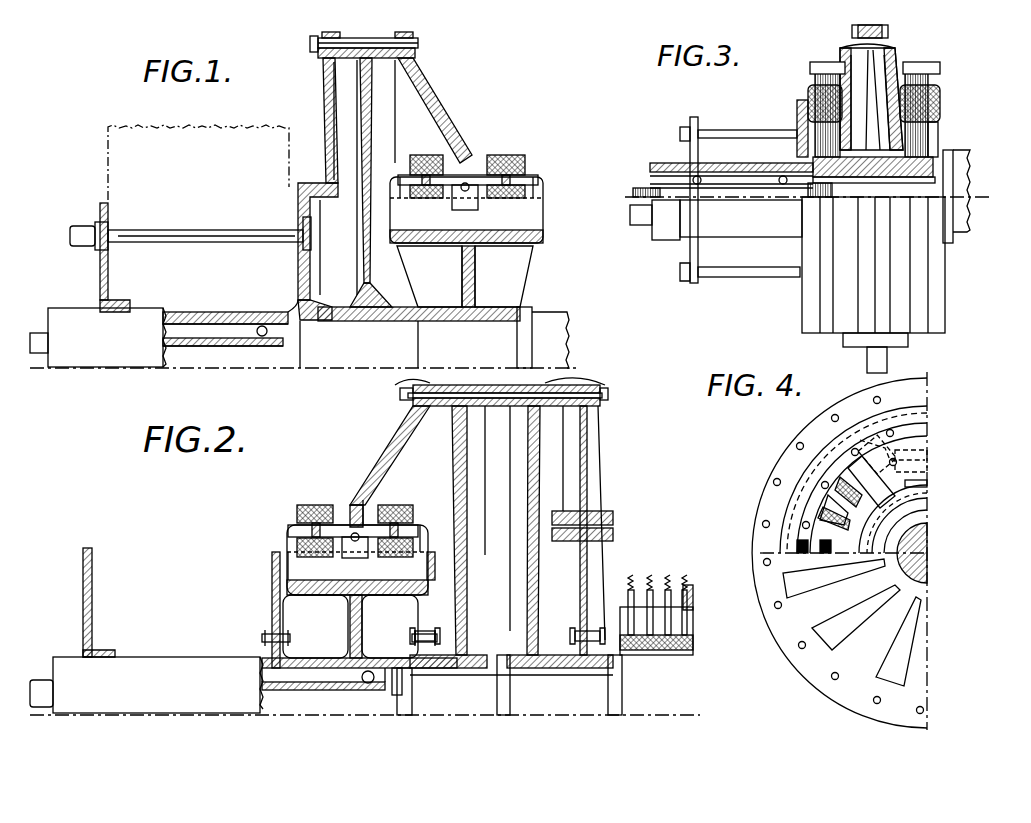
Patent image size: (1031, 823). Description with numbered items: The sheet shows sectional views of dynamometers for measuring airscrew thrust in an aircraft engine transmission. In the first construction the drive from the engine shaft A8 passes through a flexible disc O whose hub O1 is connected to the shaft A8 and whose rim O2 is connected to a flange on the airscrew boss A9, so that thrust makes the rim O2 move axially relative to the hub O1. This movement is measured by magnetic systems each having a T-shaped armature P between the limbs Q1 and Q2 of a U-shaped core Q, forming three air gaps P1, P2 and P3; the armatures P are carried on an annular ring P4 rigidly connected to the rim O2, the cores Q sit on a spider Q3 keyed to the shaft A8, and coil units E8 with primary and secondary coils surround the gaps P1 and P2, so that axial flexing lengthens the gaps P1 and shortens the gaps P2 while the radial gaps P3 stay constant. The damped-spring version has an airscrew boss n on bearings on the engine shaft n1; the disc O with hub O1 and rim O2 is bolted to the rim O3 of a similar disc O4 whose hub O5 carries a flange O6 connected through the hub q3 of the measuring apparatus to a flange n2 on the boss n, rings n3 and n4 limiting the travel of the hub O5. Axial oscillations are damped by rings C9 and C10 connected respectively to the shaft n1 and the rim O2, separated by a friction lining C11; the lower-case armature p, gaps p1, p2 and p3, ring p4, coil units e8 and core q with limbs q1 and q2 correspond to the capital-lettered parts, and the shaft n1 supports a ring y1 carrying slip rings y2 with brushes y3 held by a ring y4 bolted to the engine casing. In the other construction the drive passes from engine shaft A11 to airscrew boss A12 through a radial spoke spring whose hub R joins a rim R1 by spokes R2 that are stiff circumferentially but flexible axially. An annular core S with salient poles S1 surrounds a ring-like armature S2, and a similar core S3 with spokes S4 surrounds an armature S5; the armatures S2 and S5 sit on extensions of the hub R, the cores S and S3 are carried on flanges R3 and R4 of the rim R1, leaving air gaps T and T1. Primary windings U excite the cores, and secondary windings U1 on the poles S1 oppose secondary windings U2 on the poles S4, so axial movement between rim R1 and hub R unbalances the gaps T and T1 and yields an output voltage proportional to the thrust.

In FIG. 1, the disc O is at (362, 118).
In FIG. 2, the disc O is at (543, 596).
In FIG. 1, the hub of disc O1 is at (418, 321).
In FIG. 2, the hub of disc O1 is at (542, 672).
In FIG. 1, the rim of disc O2 is at (338, 28).
In FIG. 2, the rim of disc O2 is at (600, 392).
In FIG. 2, the rim of second flexible disc O3 is at (408, 389).
In FIG. 2, the second flexible disc O4 is at (453, 443).
In FIG. 2, the hub of second flexible disc O5 is at (480, 655).
In FIG. 2, the flange of hub O6 is at (438, 630).
In FIG. 1, the T-shaped armature P is at (477, 177).
In FIG. 1, the air gap P1 is at (520, 175).
In FIG. 1, the air gap P2 is at (462, 172).
In FIG. 1, the radial air gap P3 is at (462, 212).
In FIG. 1, the annular ring P4 is at (427, 93).
In FIG. 1, the coil unit E8 is at (430, 158).
In FIG. 1, the U-shaped core Q is at (520, 221).
In FIG. 1, the limb of core Q1 is at (512, 180).
In FIG. 1, the limb of core Q2 is at (415, 172).
In FIG. 1, the hub or spider Q3 is at (533, 248).
In FIG. 1, the engine shaft A8 is at (567, 318).
In FIG. 1, the airscrew boss A9 is at (232, 314).
In FIG. 3, the engine shaft A11 is at (948, 228).
In FIG. 3, the airscrew boss A12 is at (688, 163).
In FIG. 3, the hub of radial spoke spring R is at (930, 160).
In FIG. 4, the hub of radial spoke spring R is at (930, 570).
In FIG. 3, the rim of radial spoke spring R1 is at (888, 30).
In FIG. 4, the rim of radial spoke spring R1 is at (790, 472).
In FIG. 3, the spokes R2 is at (896, 62).
In FIG. 4, the spokes R2 is at (820, 615).
In FIG. 3, the flange R3 is at (910, 72).
In FIG. 3, the flange R4 is at (842, 60).
In FIG. 3, the annular core S is at (935, 88).
In FIG. 3, the salient poles S1 is at (940, 120).
In FIG. 4, the salient poles S1 is at (876, 513).
In FIG. 3, the armature S2 is at (936, 140).
In FIG. 4, the armature S2 is at (925, 490).
In FIG. 3, the core S3 is at (812, 71).
In FIG. 3, the radial spokes (poles) S4 is at (822, 128).
In FIG. 3, the armature S5 is at (797, 143).
In FIG. 3, the air gaps T is at (902, 138).
In FIG. 3, the air gaps T1 is at (866, 138).
In FIG. 4, the primary windings U is at (858, 488).
In FIG. 3, the secondary windings U1 is at (940, 104).
In FIG. 4, the secondary windings U1 is at (850, 483).
In FIG. 3, the secondary windings U2 is at (808, 100).
In FIG. 2, the T-shaped armature p is at (345, 522).
In FIG. 2, the air gap p1 is at (402, 545).
In FIG. 2, the air gap p2 is at (313, 530).
In FIG. 2, the radial air gap p3 is at (353, 560).
In FIG. 2, the annular ring p4 is at (386, 452).
In FIG. 2, the coil unit e8 is at (315, 503).
In FIG. 2, the U-shaped core q is at (295, 574).
In FIG. 2, the limb of core q1 is at (420, 527).
In FIG. 2, the limb of core q2 is at (287, 528).
In FIG. 2, the hub q3 is at (322, 658).
In FIG. 2, the airscrew boss n is at (190, 657).
In FIG. 2, the engine shaft n1 is at (615, 705).
In FIG. 2, the flange on airscrew boss n2 is at (272, 612).
In FIG. 2, the ring n3 is at (503, 700).
In FIG. 2, the ring n4 is at (405, 705).
In FIG. 2, the annular ring C9 is at (598, 546).
In FIG. 2, the annular ring C10 is at (596, 511).
In FIG. 2, the friction lining C11 is at (600, 528).
In FIG. 2, the ring y1 is at (690, 650).
In FIG. 2, the slip rings y2 is at (650, 650).
In FIG. 2, the brushes y3 is at (655, 600).
In FIG. 2, the ring y4 is at (690, 610).